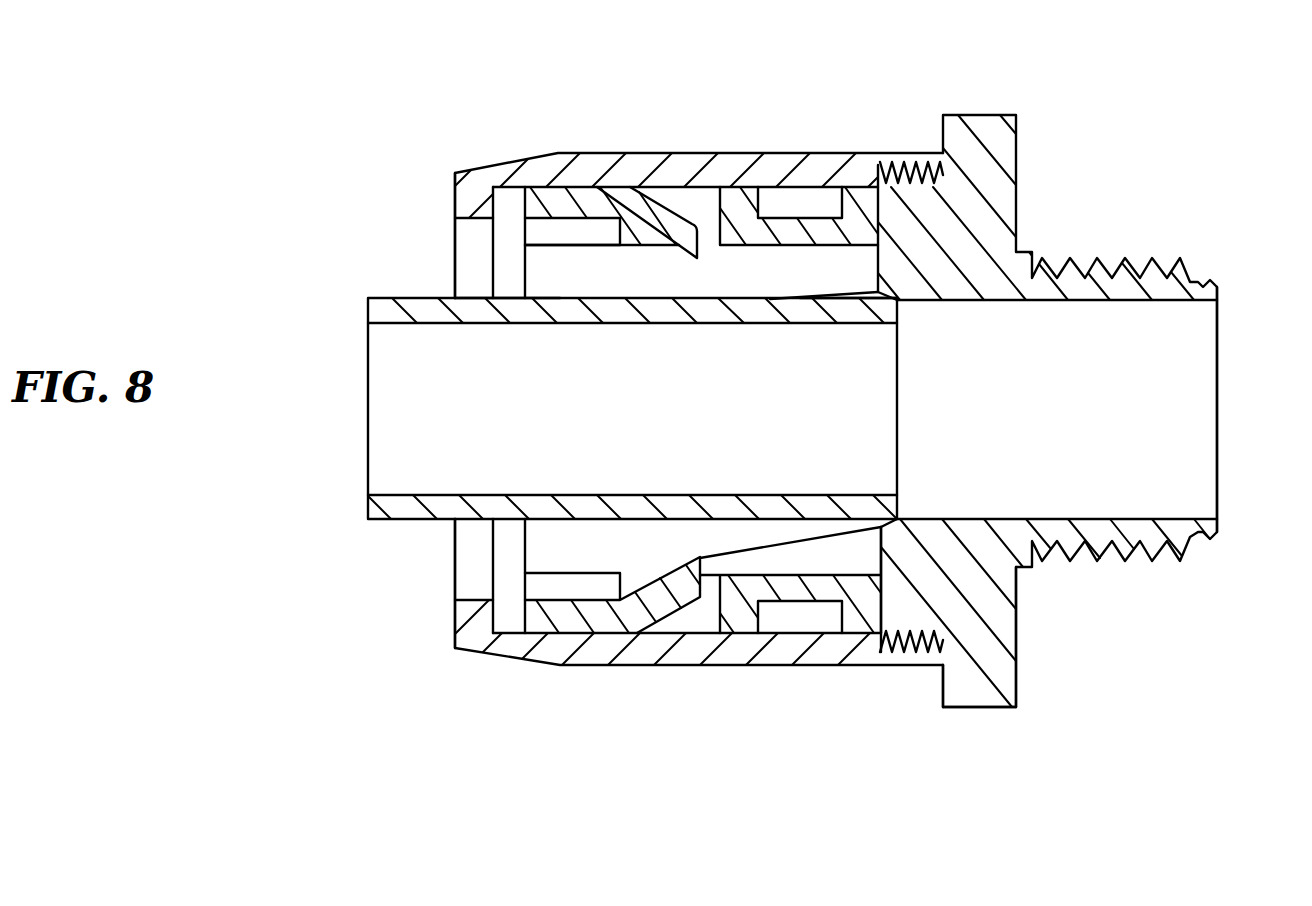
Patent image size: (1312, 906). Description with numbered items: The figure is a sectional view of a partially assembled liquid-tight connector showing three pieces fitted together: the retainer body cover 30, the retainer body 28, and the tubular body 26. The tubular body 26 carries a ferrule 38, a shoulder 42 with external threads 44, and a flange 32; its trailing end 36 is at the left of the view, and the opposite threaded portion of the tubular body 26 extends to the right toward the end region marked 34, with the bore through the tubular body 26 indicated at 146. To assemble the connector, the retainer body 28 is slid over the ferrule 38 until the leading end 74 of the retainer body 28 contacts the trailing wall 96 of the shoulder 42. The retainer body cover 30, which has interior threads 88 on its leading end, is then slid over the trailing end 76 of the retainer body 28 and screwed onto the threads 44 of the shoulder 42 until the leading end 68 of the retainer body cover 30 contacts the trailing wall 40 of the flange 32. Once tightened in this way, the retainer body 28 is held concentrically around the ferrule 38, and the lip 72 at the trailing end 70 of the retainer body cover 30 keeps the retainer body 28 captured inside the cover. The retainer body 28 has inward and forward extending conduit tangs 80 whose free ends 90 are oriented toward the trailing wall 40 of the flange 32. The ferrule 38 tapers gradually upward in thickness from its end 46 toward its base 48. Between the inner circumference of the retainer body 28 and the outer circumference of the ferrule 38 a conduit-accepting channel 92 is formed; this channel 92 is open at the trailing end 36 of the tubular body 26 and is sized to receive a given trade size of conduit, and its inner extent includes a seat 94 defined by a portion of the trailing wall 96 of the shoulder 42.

The tubular body 26 is at (977, 125).
The retainer body 28 is at (592, 186).
The retainer body cover 30 is at (637, 160).
The flange 32 is at (1003, 697).
The threaded nipple end 34 is at (1222, 292).
The trailing end 36 is at (380, 513).
The ferrule 38 is at (513, 305).
The trailing wall 40 is at (938, 698).
The shoulder 42 is at (893, 623).
The threads 44 is at (900, 170).
The end 46 is at (380, 312).
The base 48 is at (852, 312).
The leading end 68 is at (947, 650).
The trailing end 70 is at (450, 172).
The lip 72 is at (473, 193).
The leading end 74 is at (868, 198).
The trailing end 76 is at (523, 180).
The conduit tangs 80 is at (655, 603).
The interior threads 88 is at (897, 207).
The free ends 90 is at (700, 558).
The conduit-accepting channel 92 is at (602, 541).
The seat 94 is at (890, 265).
The trailing wall 96 is at (873, 543).
The post bore 146 is at (375, 438).